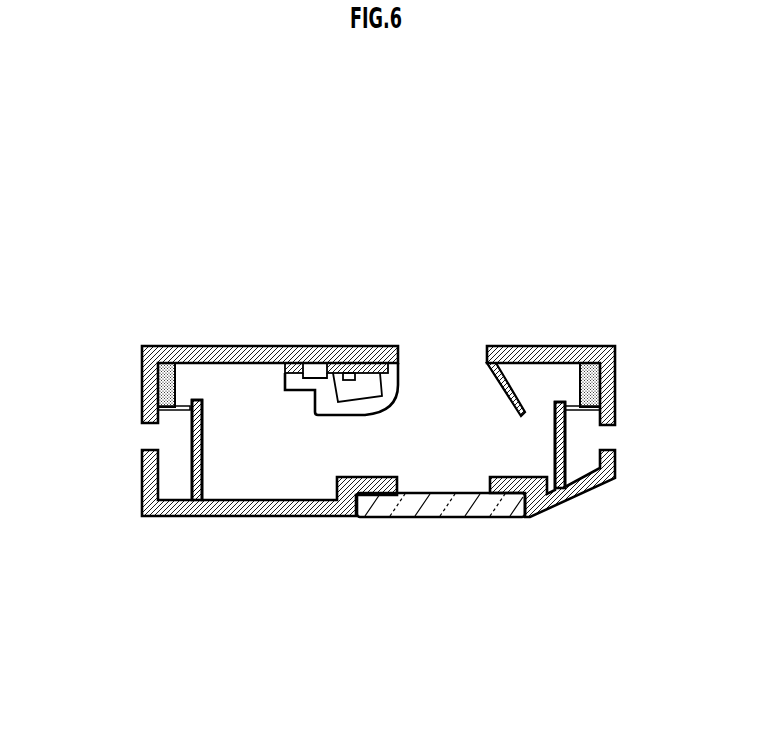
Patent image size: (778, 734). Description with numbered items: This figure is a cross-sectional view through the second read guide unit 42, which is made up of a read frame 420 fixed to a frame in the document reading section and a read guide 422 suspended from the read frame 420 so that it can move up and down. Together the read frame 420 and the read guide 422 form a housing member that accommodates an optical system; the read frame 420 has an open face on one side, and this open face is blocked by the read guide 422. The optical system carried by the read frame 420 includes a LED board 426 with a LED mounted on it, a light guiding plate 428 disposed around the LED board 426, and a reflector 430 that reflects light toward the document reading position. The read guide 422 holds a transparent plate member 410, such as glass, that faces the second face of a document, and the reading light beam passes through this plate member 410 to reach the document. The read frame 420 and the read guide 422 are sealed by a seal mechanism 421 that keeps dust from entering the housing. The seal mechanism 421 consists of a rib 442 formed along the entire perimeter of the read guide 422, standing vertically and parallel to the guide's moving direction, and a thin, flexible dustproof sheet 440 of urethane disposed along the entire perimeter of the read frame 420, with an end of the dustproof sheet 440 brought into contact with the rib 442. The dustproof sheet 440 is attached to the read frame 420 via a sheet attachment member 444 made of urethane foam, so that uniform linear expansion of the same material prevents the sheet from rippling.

The second read guide unit 42 is at (287, 245).
The plate member 410 is at (437, 518).
The read frame 420 is at (612, 327).
The seal mechanism 421 is at (63, 407).
The read guide 422 is at (598, 498).
The LED board 426 is at (358, 368).
The light guiding plate 428 is at (358, 412).
The reflector 430 is at (493, 390).
The dustproof sheet 440 is at (176, 412).
The rib 442 is at (192, 444).
The sheet attachment member 444 is at (167, 383).